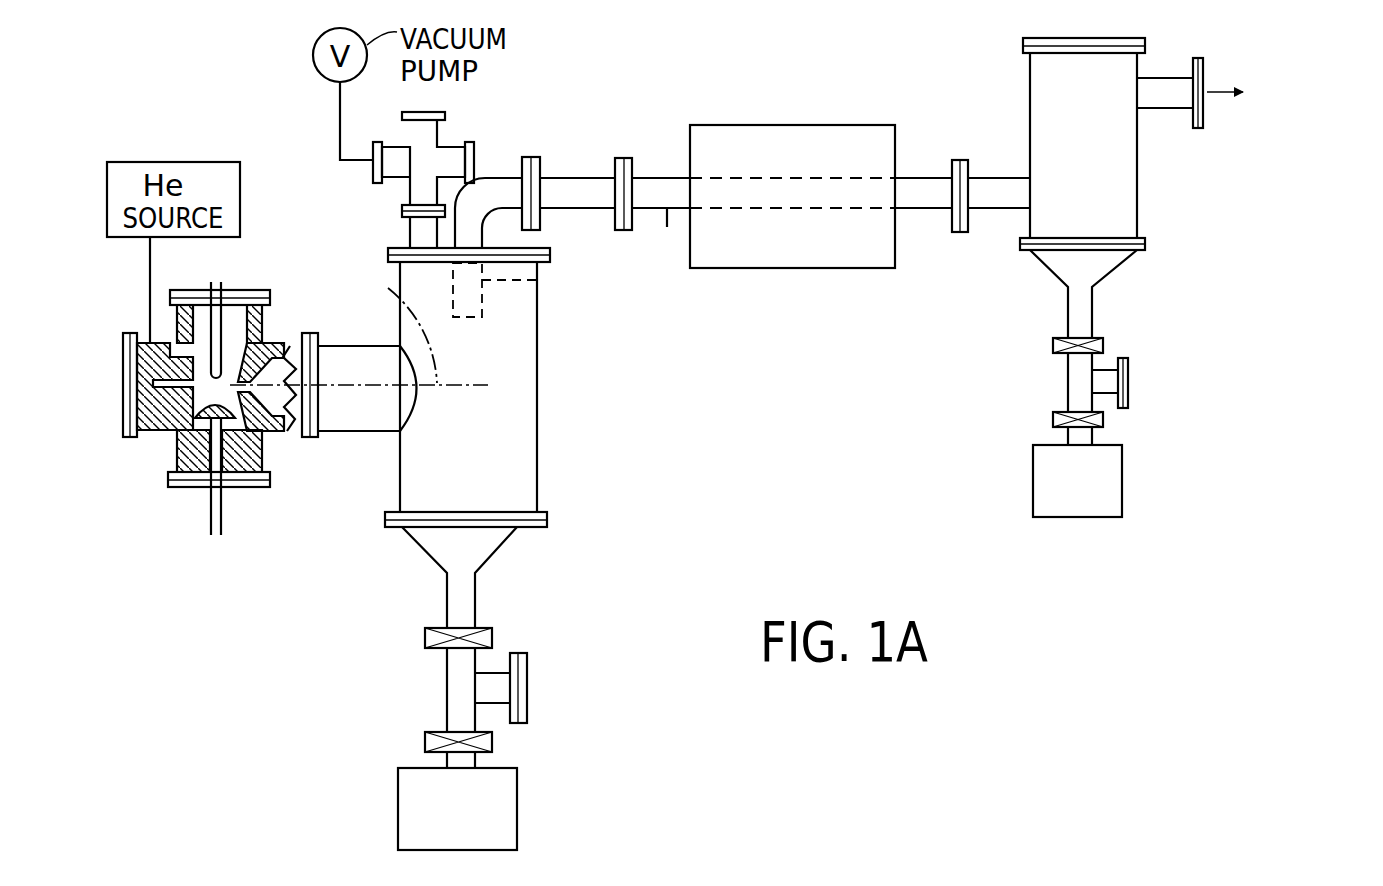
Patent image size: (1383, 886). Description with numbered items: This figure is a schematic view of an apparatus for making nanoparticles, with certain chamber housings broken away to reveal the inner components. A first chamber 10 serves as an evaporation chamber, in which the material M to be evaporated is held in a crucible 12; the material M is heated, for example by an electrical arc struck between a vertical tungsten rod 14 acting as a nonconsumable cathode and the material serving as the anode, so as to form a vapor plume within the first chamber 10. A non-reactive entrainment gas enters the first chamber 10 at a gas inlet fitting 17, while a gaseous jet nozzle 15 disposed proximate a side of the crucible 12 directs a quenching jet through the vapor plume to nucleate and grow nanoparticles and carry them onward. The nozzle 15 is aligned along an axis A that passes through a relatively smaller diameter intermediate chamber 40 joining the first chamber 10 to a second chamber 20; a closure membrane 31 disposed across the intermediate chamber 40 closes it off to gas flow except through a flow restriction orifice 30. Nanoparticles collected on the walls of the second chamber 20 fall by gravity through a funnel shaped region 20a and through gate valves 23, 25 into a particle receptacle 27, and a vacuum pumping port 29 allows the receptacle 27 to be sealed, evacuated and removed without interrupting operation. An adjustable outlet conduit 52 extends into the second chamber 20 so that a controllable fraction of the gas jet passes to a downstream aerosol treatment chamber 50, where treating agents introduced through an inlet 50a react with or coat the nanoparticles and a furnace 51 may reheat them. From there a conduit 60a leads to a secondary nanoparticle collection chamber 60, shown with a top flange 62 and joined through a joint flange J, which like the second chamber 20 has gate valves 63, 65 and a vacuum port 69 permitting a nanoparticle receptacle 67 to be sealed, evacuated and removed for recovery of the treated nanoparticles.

The first chamber 10 is at (235, 388).
The crucible 12 is at (262, 440).
The vertical tungsten rod 14 is at (215, 327).
The gaseous jet nozzle 15 is at (152, 437).
The gas inlet fitting 17 is at (172, 347).
The second chamber 20 is at (513, 483).
The funnel shaped region 20a is at (473, 547).
The gate valve 23 is at (430, 638).
The gate valve 25 is at (430, 742).
The particle receptacle 27 is at (502, 788).
The vacuum pumping port 29 is at (523, 685).
The flow restriction orifice 30 is at (240, 382).
The closure membrane 31 is at (273, 420).
The intermediate chamber 40 is at (372, 422).
The aerosol treatment chamber 50 is at (797, 178).
The inlet 50a is at (660, 212).
The furnace 51 is at (838, 140).
The adjustable outlet conduit 52 is at (648, 197).
The secondary nanoparticle collection chamber 60 is at (1167, 241).
The conduit 60a is at (993, 200).
The top flange 62 is at (1030, 113).
The gate valve 63 is at (1053, 345).
The gate valve 65 is at (1055, 417).
The nanoparticle receptacle 67 is at (1038, 488).
The vacuum port 69 is at (1130, 378).
The joint flange J is at (628, 167).
The axis A is at (402, 326).
The material M is at (180, 383).